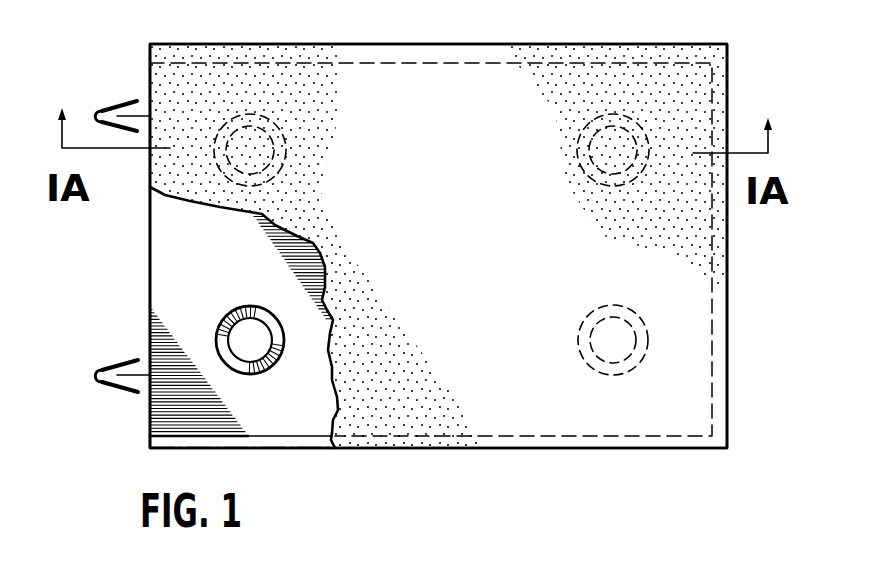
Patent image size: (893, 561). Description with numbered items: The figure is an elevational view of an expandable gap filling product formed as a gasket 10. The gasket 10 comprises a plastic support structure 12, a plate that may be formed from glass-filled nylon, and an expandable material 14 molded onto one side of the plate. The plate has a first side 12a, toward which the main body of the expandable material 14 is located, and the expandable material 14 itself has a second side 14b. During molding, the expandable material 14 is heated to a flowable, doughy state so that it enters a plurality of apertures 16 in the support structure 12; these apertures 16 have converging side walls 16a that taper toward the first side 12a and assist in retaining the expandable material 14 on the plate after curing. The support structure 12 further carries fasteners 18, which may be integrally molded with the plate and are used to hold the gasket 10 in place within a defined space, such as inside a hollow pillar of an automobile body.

The gasket 10 is at (364, 467).
The plastic support structure 12 is at (720, 363).
The first side of support structure 12a is at (244, 317).
The expandable material 14 is at (736, 302).
The second side of expandable material 14b is at (516, 274).
The apertures 16 is at (288, 122).
The converging side walls 16a is at (243, 367).
The fasteners 18 is at (112, 98).